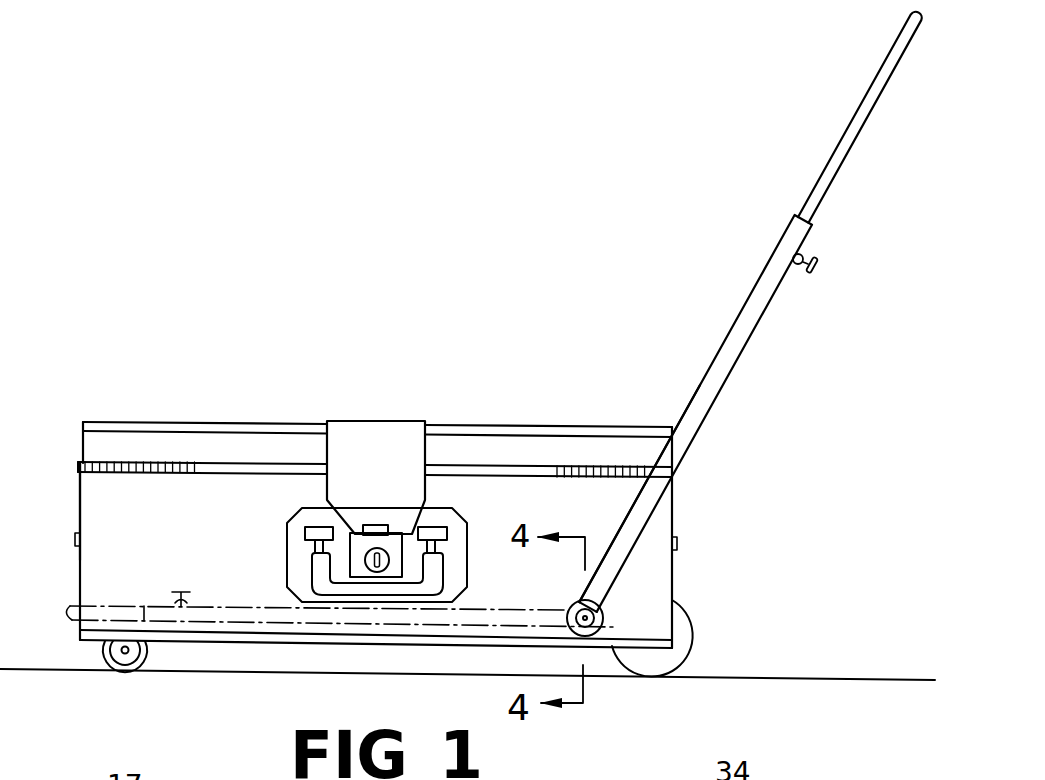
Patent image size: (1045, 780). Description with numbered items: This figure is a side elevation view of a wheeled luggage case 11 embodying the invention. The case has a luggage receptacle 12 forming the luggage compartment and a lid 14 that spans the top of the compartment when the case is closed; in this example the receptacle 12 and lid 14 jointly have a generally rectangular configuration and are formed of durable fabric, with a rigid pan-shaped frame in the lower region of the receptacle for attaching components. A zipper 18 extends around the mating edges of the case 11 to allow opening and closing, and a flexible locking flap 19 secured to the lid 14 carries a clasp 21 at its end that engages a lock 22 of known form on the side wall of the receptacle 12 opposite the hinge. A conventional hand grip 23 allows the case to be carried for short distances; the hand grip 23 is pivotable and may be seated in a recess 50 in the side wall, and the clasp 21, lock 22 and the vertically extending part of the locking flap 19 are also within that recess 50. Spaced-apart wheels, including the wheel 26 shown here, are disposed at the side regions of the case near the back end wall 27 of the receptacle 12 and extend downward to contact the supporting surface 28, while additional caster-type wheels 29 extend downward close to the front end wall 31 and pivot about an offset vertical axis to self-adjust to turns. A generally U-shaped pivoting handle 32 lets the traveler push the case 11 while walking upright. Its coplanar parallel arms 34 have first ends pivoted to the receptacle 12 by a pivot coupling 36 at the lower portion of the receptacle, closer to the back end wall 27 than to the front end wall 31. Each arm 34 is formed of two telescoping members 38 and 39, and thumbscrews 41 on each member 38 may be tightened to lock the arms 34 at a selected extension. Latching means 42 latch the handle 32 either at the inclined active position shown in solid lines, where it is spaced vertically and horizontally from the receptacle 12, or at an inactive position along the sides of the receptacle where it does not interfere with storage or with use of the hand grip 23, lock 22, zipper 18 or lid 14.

The wheeled luggage case 11 is at (414, 224).
The luggage receptacle 12 is at (168, 524).
The lid 14 is at (147, 445).
The zipper 18 is at (228, 467).
The locking flap 19 is at (388, 421).
The clasp 21 is at (374, 524).
The lock 22 is at (396, 550).
The hand grip 23 is at (320, 573).
The second wheel 26 is at (693, 627).
The back end wall 27 is at (680, 565).
The supporting surface 28 is at (812, 677).
The additional wheels 29 is at (147, 655).
The front end wall 31 is at (79, 509).
The pivoting handle 32 is at (738, 261).
The arms 34 is at (764, 330).
The pivot coupling 36 is at (612, 620).
The telescoping member 38 is at (706, 373).
The telescoping member 39 is at (857, 110).
The thumbscrews 41 is at (822, 260).
The latching means 42 is at (574, 609).
The recess 50 is at (447, 522).